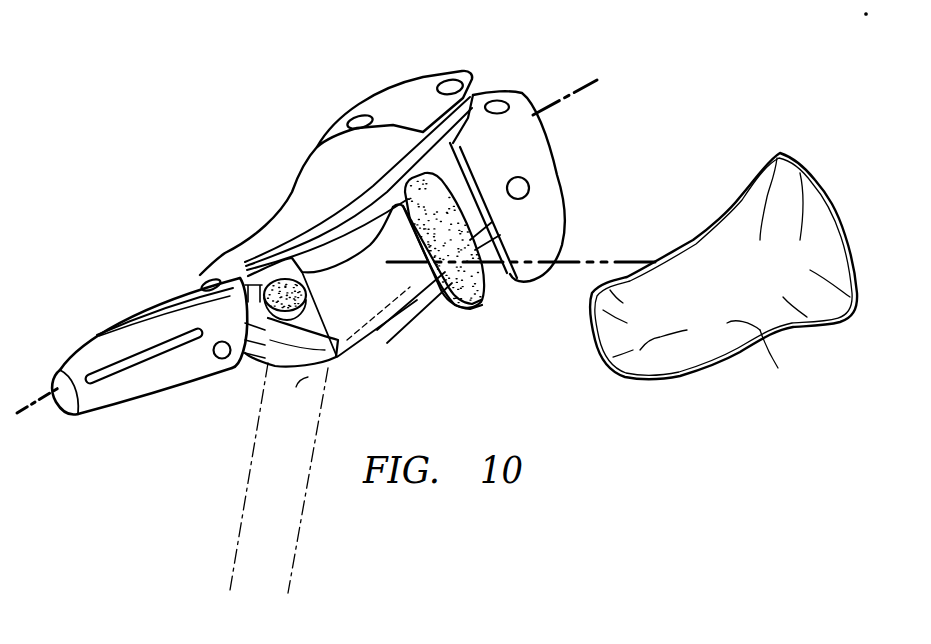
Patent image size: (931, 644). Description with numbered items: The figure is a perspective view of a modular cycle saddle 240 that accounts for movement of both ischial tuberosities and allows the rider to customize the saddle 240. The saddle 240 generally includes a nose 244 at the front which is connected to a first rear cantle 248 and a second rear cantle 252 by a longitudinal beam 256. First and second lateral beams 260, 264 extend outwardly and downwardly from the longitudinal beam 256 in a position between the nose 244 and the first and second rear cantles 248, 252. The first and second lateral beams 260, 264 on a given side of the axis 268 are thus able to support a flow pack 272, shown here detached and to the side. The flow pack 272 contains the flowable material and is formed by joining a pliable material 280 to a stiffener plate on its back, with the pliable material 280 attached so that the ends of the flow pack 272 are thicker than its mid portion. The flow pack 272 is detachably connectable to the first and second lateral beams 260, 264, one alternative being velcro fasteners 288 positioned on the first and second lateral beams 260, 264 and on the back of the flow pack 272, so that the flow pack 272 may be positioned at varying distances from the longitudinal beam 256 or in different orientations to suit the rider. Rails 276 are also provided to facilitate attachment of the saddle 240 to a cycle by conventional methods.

The saddle 240 is at (124, 316).
The nose 244 is at (108, 397).
The first rear cantle 248 is at (553, 147).
The second rear cantle 252 is at (400, 83).
The longitudinal beam 256 is at (362, 252).
The first lateral beam 260 is at (252, 367).
The second lateral beam 264 is at (483, 311).
The axis 268 is at (27, 407).
The flow pack 272 is at (302, 205).
The rails 276 is at (420, 294).
The pliable material 280 is at (789, 361).
The velcro fasteners 288 is at (305, 293).